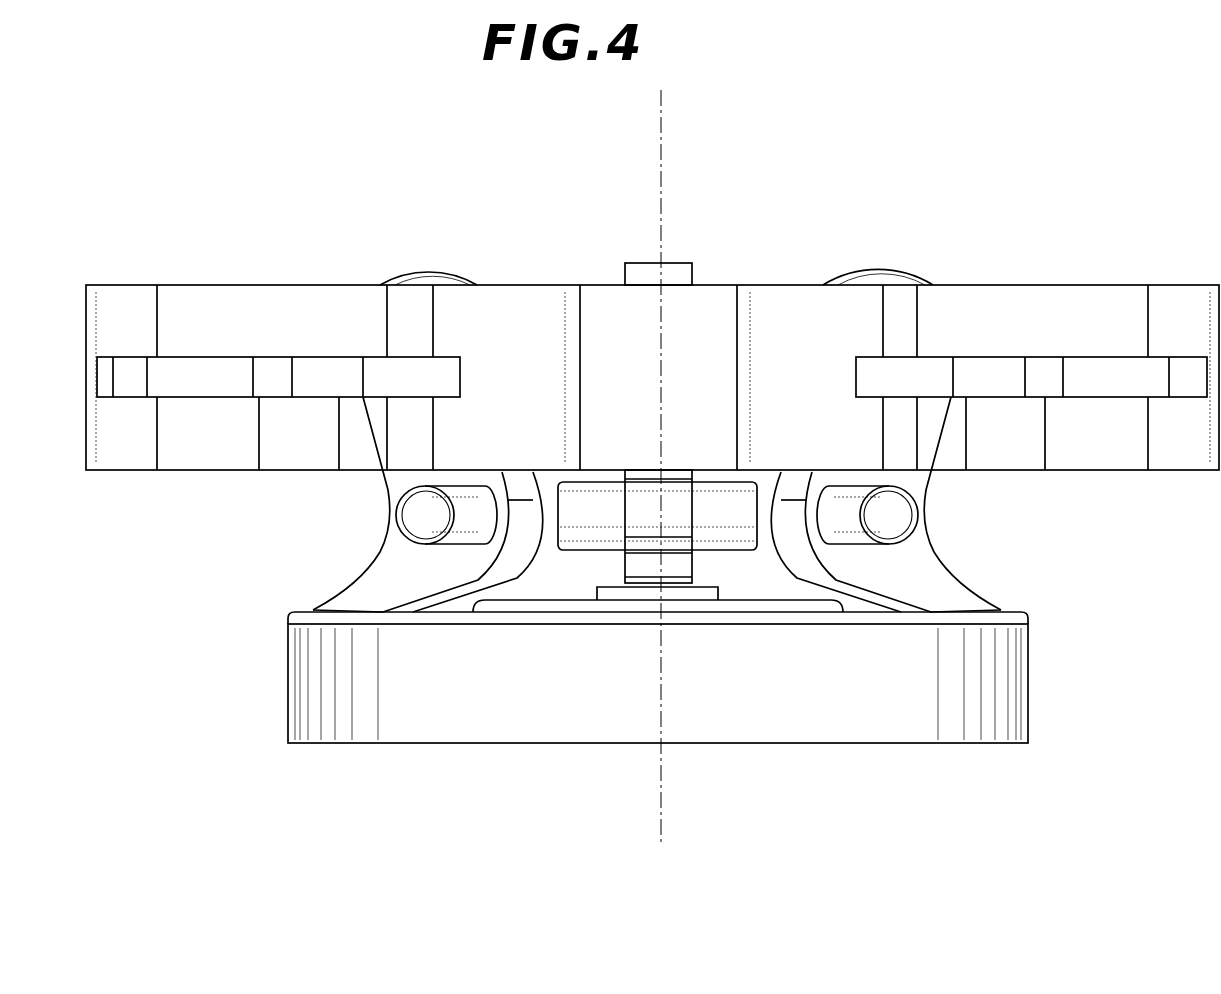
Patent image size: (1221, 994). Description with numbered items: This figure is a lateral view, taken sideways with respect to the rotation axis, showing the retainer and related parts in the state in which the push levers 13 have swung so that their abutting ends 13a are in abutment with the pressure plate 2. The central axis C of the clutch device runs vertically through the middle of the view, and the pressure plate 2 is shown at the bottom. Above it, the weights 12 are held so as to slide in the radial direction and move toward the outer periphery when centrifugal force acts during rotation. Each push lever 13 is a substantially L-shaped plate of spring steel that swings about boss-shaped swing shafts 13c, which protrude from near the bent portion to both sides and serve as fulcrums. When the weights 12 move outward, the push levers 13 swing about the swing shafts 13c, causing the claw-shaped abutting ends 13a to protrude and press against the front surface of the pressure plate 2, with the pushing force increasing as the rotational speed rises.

The pressure plate 2 is at (308, 697).
The weights 12 is at (222, 310).
The push levers 13 is at (368, 478).
The abutting end 13a is at (330, 603).
The swing shafts 13c is at (420, 518).
The central axis C is at (662, 177).